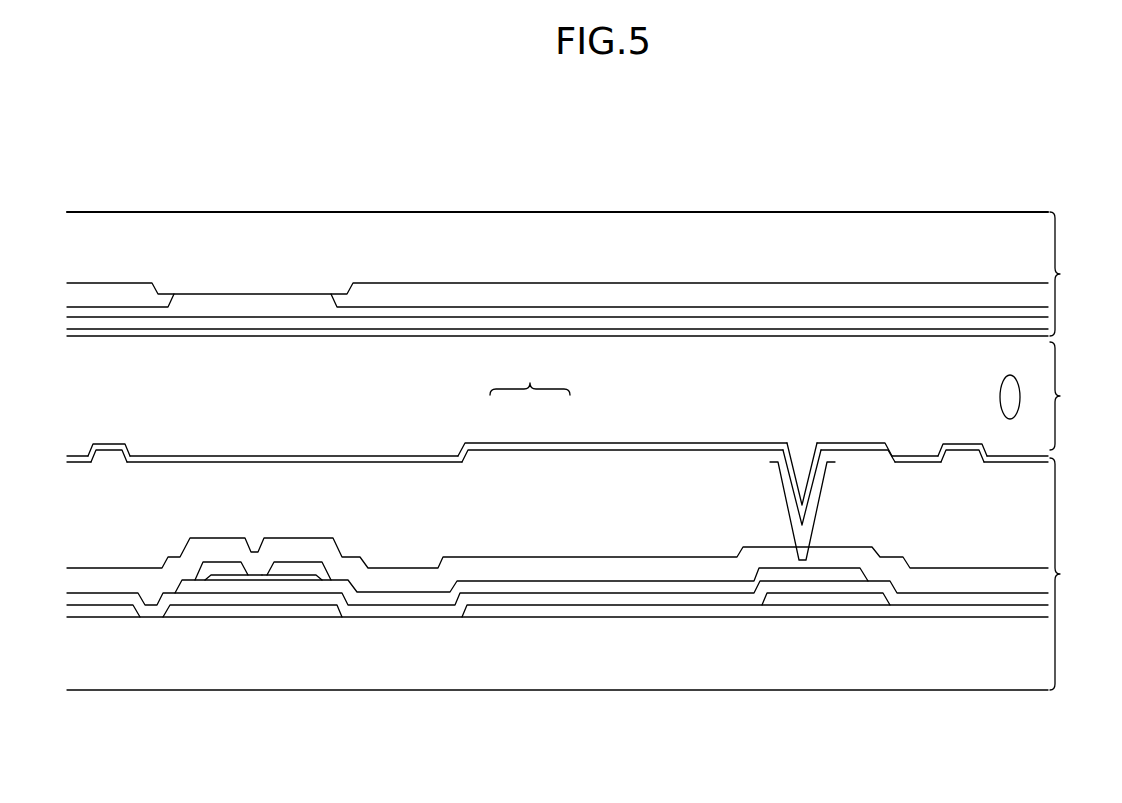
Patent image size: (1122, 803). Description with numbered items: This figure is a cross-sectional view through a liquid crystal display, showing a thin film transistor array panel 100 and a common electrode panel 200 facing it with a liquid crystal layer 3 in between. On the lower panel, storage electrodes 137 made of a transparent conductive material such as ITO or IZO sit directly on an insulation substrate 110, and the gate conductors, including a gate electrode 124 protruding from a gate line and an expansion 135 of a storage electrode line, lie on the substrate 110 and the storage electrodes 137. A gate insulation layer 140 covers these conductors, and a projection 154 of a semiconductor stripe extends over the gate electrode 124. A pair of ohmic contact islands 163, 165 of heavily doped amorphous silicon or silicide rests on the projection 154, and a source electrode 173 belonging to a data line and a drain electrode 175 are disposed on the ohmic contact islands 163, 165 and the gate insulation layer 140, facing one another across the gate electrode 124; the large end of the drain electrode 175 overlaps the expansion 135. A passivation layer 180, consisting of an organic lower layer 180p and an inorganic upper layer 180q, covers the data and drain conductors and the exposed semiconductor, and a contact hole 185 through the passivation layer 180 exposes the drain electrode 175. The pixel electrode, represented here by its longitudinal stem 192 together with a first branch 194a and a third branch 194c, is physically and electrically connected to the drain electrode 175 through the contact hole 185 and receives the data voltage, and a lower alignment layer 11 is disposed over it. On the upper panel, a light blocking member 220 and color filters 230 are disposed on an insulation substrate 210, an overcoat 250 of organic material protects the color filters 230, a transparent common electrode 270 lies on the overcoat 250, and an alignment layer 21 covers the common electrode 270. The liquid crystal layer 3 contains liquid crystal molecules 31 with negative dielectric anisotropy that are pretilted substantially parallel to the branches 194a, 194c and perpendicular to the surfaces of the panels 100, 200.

The common electrode panel 200 is at (1076, 274).
The insulation substrate 210 is at (601, 238).
The light blocking member 220 is at (245, 290).
The color filter 230 is at (106, 293).
The overcoat 250 is at (698, 313).
The common electrode 270 is at (805, 325).
The alignment layer 21 is at (746, 337).
The liquid crystal layer 3 is at (1067, 396).
The liquid crystal molecule 31 is at (1000, 384).
The thin film transistor array panel 100 is at (1076, 574).
The insulation substrate 110 is at (495, 660).
The storage electrode 137 is at (93, 610).
The gate electrode 124 is at (257, 612).
The gate insulation layer 140 is at (950, 600).
The projection 154 is at (287, 590).
The ohmic contact island 163 is at (222, 578).
The ohmic contact island 165 is at (303, 578).
The source electrode 173 is at (186, 590).
The drain electrode 175 is at (407, 598).
The expansion 135 is at (820, 598).
The passivation layer 180 is at (530, 376).
The lower layer 180p is at (506, 567).
The upper layer 180q is at (560, 487).
The contact hole 185 is at (782, 494).
The longitudinal stem 192 is at (692, 452).
The first branch 194a is at (958, 453).
The third branch 194c is at (108, 453).
The lower alignment layer 11 is at (865, 451).